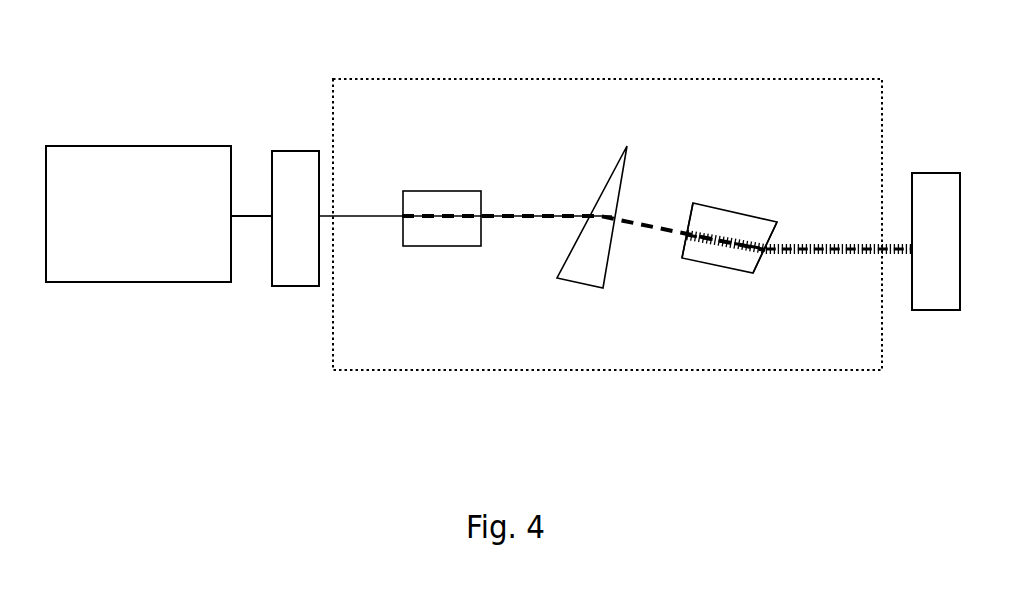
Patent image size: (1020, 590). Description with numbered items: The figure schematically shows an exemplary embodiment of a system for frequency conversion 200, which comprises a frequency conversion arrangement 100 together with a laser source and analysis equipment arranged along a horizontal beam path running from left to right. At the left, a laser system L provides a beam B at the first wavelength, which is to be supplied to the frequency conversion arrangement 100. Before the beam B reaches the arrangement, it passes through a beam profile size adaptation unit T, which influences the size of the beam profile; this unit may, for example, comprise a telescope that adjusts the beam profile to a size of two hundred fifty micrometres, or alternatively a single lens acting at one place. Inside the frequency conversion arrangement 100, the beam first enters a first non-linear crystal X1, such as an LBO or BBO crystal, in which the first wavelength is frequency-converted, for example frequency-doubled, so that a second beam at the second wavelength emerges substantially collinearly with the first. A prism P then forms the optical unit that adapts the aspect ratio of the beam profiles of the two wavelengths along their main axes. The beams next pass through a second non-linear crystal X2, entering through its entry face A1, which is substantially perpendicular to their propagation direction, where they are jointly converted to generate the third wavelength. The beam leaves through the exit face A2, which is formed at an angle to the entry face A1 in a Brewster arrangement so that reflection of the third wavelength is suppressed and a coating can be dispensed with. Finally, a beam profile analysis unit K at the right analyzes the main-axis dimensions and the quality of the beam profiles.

The laser system L is at (137, 146).
The beam profile size adaptation unit T is at (298, 150).
The beam B is at (252, 220).
The frequency conversion arrangement 100 is at (638, 81).
The first non-linear crystal X1 is at (442, 190).
The prism P is at (580, 284).
The second non-linear crystal X2 is at (733, 213).
The entry face A1 is at (682, 250).
The exit face A2 is at (752, 267).
The beam profile analysis unit K is at (933, 312).
The system for frequency conversion 200 is at (193, 377).